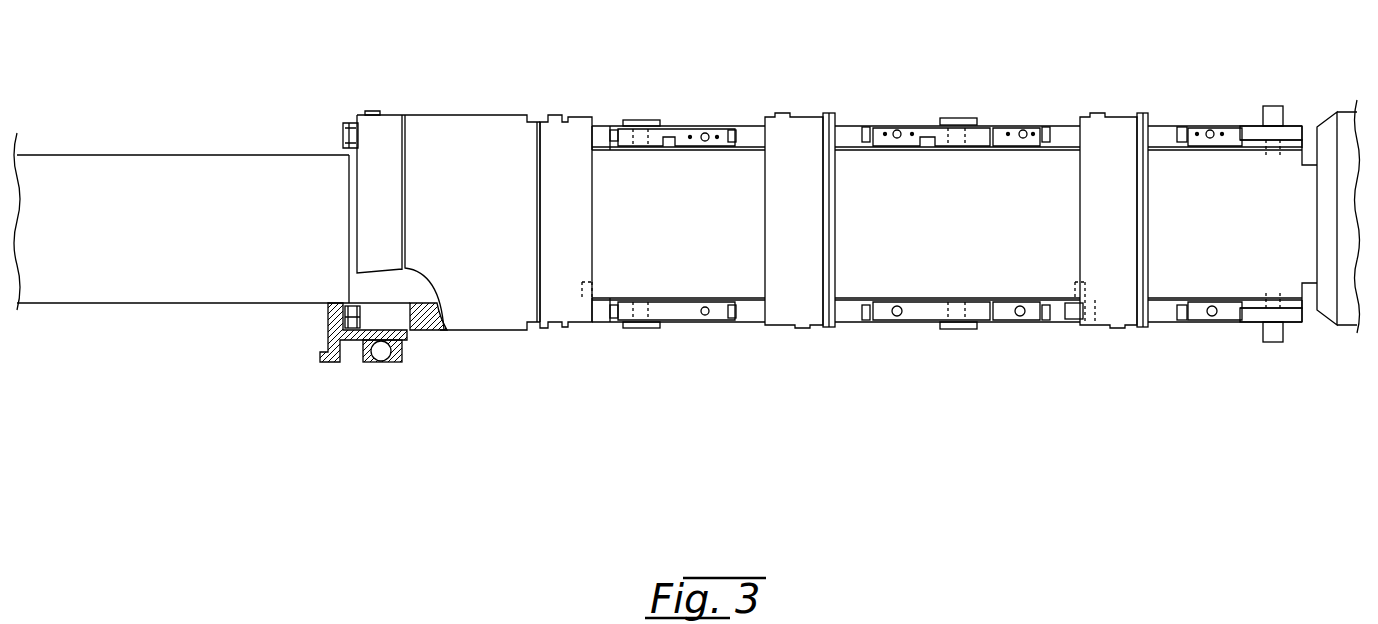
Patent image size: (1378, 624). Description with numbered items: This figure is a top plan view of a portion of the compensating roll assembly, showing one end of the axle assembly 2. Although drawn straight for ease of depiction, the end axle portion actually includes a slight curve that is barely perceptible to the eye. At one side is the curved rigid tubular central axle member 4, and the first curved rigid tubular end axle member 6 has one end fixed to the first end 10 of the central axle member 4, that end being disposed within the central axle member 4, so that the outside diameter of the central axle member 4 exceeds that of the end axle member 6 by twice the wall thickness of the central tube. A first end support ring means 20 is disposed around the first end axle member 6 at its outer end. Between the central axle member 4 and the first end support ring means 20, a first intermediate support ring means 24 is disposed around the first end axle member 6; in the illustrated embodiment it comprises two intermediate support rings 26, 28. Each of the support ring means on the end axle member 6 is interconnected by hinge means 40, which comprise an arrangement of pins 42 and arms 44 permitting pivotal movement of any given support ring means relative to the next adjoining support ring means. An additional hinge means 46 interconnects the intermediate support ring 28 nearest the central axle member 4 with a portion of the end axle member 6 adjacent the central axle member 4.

The axle assembly 2 is at (592, 50).
The central axle member 4 is at (1345, 112).
The first end axle member 6 is at (944, 226).
The first end of the central axle member 10 is at (1352, 330).
The first end support ring means 20 is at (450, 226).
The first intermediate support ring means 24 is at (800, 117).
The intermediate support ring 26 is at (770, 226).
The intermediate support ring 28 is at (1093, 226).
The hinge means 40 is at (700, 128).
The pins 42 is at (640, 120).
The arms 44 is at (618, 148).
The additional hinge means 46 is at (1220, 125).